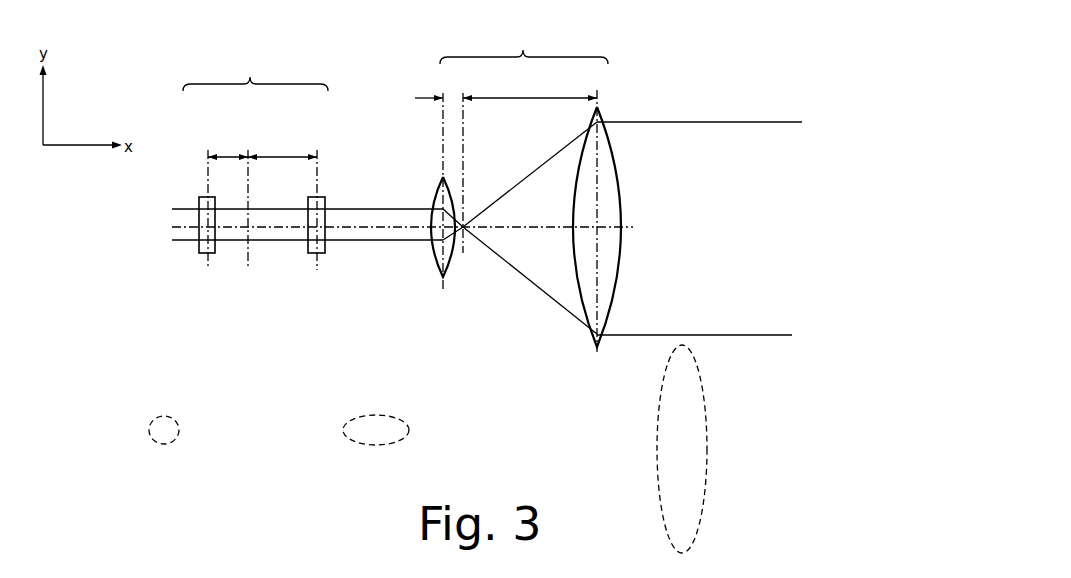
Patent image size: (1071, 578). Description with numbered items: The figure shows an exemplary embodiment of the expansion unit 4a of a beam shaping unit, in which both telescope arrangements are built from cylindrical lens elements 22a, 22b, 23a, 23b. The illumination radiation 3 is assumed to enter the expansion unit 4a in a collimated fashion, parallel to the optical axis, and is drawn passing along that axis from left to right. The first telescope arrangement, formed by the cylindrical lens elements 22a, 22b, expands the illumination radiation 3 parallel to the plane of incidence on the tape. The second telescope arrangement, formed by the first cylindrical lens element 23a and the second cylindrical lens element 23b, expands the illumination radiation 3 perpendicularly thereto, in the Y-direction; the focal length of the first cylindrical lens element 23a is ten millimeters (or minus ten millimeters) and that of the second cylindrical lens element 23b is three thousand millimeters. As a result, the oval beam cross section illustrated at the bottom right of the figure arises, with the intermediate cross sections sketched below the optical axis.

The expansion unit 4a is at (160, 126).
The illumination radiation 3 is at (182, 208).
The cylindrical lens element 22a is at (200, 254).
The cylindrical lens element 22b is at (311, 254).
The first cylindrical lens element 23a is at (440, 258).
The second cylindrical lens element 23b is at (607, 178).